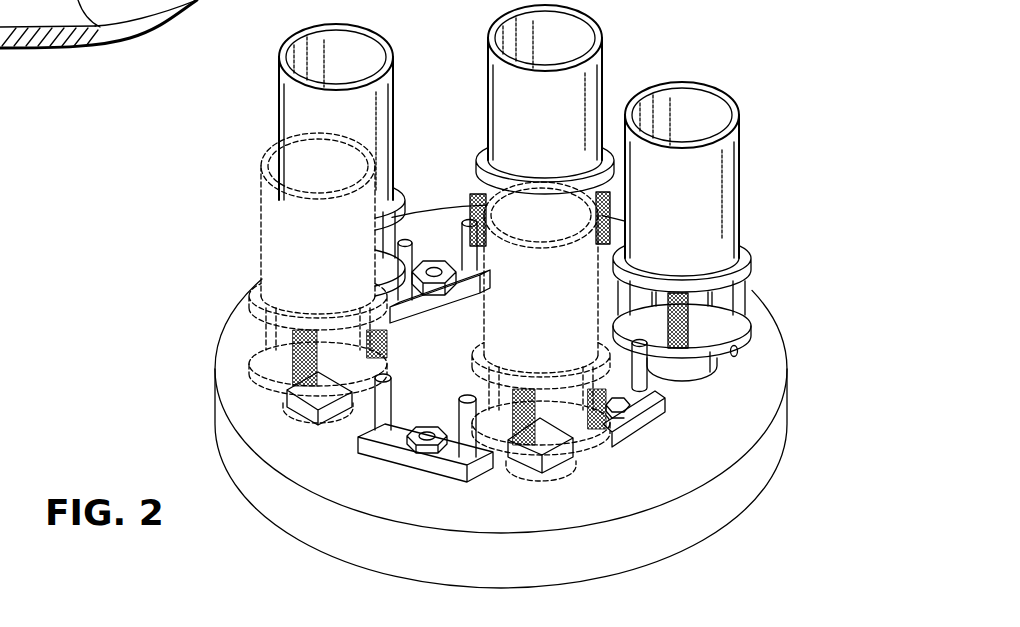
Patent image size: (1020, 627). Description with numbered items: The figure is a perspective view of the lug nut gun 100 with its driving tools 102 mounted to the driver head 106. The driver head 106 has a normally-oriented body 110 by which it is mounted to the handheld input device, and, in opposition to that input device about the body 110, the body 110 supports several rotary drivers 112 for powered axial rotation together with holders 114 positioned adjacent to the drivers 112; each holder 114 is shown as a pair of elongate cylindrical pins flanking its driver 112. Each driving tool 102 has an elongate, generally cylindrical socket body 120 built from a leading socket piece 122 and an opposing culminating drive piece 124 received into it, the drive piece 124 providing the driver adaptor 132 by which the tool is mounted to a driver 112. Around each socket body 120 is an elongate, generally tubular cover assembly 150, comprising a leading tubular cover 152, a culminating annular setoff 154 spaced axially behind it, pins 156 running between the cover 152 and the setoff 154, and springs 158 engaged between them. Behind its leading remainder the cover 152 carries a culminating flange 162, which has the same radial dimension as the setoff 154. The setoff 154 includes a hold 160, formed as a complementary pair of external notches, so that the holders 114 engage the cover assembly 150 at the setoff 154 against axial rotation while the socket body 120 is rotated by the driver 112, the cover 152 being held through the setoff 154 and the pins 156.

The lug nut gun 100 is at (237, 303).
The driving tool 102 is at (742, 160).
The driver head 106 is at (232, 338).
The body 110 is at (233, 392).
The rotary driver 112 is at (312, 408).
The holder 114 is at (377, 398).
The socket body 120 is at (684, 384).
The socket piece 122 is at (738, 300).
The drive piece 124 is at (700, 395).
The driver adaptor 132 is at (706, 402).
The cover assembly 150 is at (742, 207).
The cover 152 is at (690, 82).
The setoff 154 is at (752, 337).
The pin 156 is at (653, 292).
The spring 158 is at (708, 288).
The hold 160 is at (686, 356).
The flange 162 is at (753, 252).